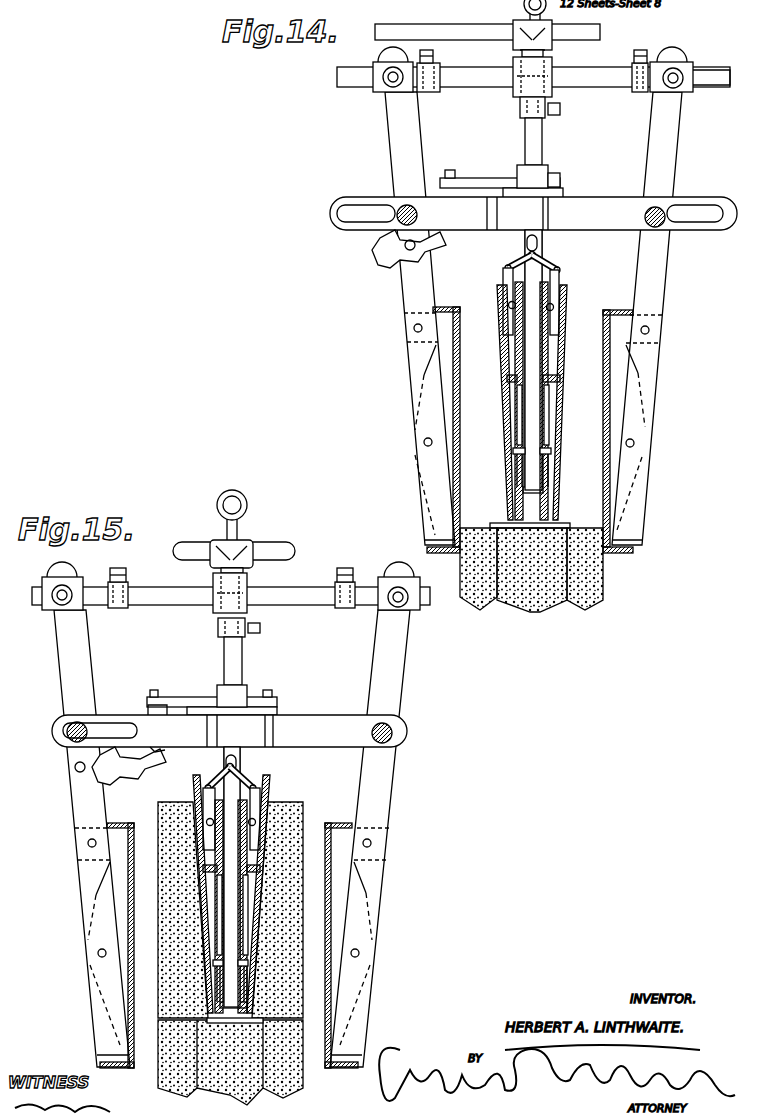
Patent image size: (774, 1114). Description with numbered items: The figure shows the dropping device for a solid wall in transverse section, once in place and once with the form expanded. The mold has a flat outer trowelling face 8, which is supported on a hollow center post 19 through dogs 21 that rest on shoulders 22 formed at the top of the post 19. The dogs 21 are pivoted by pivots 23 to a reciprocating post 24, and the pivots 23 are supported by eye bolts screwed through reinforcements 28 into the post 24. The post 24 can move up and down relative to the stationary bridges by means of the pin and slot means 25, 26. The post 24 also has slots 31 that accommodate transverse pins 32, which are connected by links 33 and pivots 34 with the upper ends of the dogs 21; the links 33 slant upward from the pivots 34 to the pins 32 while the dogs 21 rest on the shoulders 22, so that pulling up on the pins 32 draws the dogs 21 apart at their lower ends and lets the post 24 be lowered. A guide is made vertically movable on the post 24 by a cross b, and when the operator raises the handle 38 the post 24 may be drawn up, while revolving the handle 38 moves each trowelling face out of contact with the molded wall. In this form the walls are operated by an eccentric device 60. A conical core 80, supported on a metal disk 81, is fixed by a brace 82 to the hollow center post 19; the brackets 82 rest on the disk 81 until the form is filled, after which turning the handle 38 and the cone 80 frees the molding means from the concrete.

In FIG. 14, the outer trowelling face 8 is at (460, 450).
In FIG. 15, the outer trowelling face 8 is at (128, 823).
In FIG. 14, the hollow center post 19 is at (516, 414).
In FIG. 15, the hollow center post 19 is at (248, 923).
In FIG. 14, the dog 21 is at (553, 328).
In FIG. 15, the dog 21 is at (215, 798).
In FIG. 14, the shoulder 22 is at (514, 338).
In FIG. 15, the shoulder 22 is at (220, 833).
In FIG. 14, the pivot 23 is at (553, 305).
In FIG. 14, the reciprocating post 24 is at (526, 135).
In FIG. 15, the reciprocating post 24 is at (242, 660).
In FIG. 14, the pin 25 is at (551, 452).
In FIG. 15, the pin 25 is at (217, 962).
In FIG. 14, the slot 26 is at (546, 462).
In FIG. 15, the slot 26 is at (217, 948).
In FIG. 14, the reinforcement 28 is at (515, 295).
In FIG. 15, the reinforcement 28 is at (220, 810).
In FIG. 14, the slot 31 is at (540, 242).
In FIG. 15, the slot 31 is at (228, 762).
In FIG. 14, the transverse pin 32 is at (529, 255).
In FIG. 15, the transverse pin 32 is at (227, 768).
In FIG. 14, the link 33 is at (508, 266).
In FIG. 15, the link 33 is at (247, 775).
In FIG. 14, the pivot 34 is at (558, 268).
In FIG. 15, the pivot 34 is at (268, 786).
In FIG. 14, the handle 38 is at (600, 33).
In FIG. 15, the handle 38 is at (296, 549).
In FIG. 14, the eccentric device 60 is at (572, 183).
In FIG. 15, the eccentric device 60 is at (211, 689).
In FIG. 14, the conical core 80 is at (562, 290).
In FIG. 15, the conical core 80 is at (193, 780).
In FIG. 14, the metal disk 81 is at (556, 523).
In FIG. 15, the metal disk 81 is at (260, 1013).
In FIG. 14, the brace 82 is at (556, 360).
In FIG. 15, the brace 82 is at (262, 868).
In FIG. 14, the cross b is at (520, 92).
In FIG. 15, the cross b is at (213, 612).